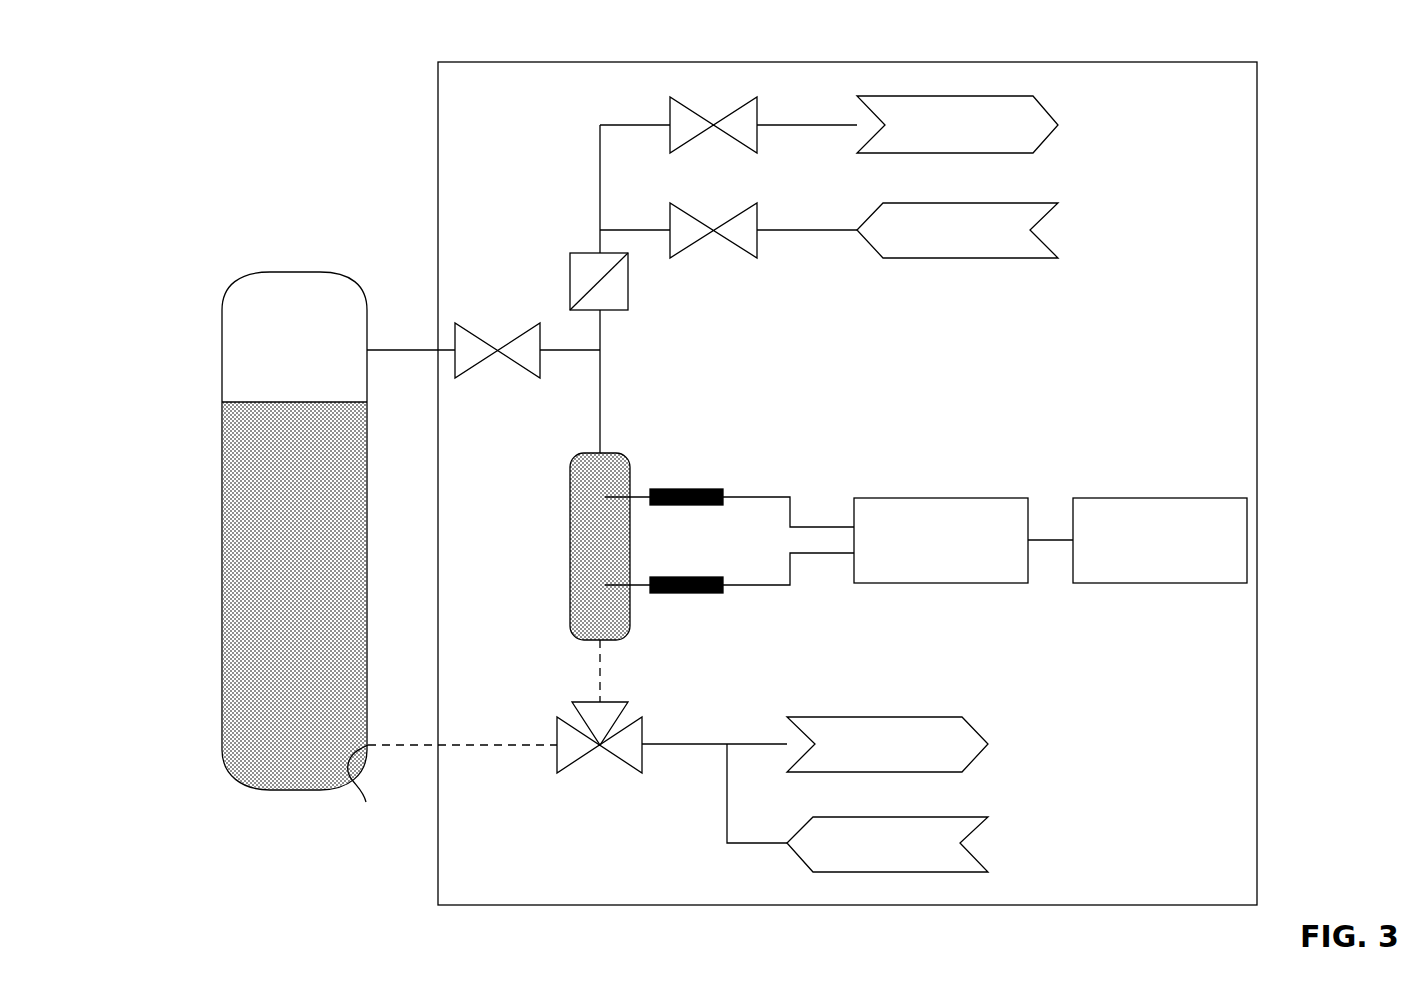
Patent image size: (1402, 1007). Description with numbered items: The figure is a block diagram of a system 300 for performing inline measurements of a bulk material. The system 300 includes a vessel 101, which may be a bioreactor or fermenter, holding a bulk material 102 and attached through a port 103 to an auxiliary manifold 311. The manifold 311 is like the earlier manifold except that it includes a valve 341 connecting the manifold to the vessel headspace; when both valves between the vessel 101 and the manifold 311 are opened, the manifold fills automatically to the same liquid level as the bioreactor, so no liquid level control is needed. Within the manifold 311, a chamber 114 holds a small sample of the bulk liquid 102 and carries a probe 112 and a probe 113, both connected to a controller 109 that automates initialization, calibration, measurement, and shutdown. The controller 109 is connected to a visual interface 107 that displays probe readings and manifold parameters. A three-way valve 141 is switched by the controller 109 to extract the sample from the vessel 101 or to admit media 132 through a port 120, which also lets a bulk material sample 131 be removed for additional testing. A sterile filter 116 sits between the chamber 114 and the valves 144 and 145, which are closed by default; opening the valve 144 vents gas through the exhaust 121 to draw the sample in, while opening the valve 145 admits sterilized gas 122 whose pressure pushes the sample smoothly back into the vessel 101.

The system 300 is at (176, 62).
The manifold 311 is at (504, 62).
The vessel 101 is at (283, 272).
The bulk material 102 is at (293, 401).
The port 103 is at (452, 789).
The valve 341 is at (517, 370).
The sterile filter 116 is at (592, 253).
The valve 144 is at (733, 148).
The valve 145 is at (733, 253).
The exhaust 121 is at (926, 96).
The gas 122 is at (926, 202).
The chamber 114 is at (570, 544).
The probe 113 is at (685, 488).
The probe 112 is at (685, 576).
The controller 109 is at (923, 497).
The visual interface 107 is at (1143, 497).
The valve 141 is at (570, 720).
The port 120 is at (685, 743).
The bulk material sample 131 is at (855, 716).
The media 132 is at (855, 816).